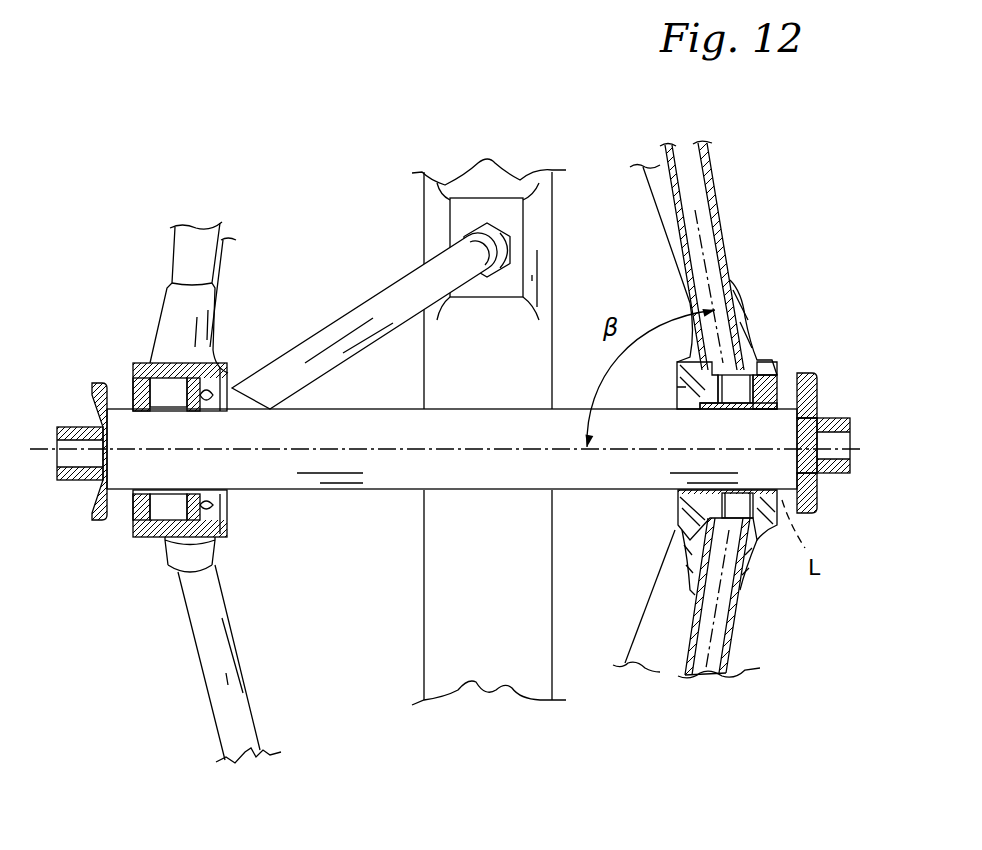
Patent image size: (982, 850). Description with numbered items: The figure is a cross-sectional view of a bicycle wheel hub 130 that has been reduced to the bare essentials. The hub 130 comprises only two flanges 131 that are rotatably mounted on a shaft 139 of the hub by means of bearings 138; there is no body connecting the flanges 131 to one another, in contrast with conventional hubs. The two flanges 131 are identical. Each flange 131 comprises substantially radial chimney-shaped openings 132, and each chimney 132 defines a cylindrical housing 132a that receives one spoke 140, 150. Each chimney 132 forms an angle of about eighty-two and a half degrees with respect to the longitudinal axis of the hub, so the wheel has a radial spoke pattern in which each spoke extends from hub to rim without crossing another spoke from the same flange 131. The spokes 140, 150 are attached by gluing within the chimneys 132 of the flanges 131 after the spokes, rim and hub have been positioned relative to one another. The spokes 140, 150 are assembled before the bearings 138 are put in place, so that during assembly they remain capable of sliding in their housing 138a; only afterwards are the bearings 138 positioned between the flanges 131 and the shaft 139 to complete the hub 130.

The hub 130 is at (290, 187).
The flange 131 is at (147, 547).
The chimney-shaped opening 132 is at (738, 295).
The cylindrical housing 132a is at (732, 578).
The bearing 138 is at (163, 392).
The housing 138a is at (137, 505).
The shaft 139 is at (760, 423).
The spoke 140 is at (708, 660).
The spoke 150 is at (222, 712).